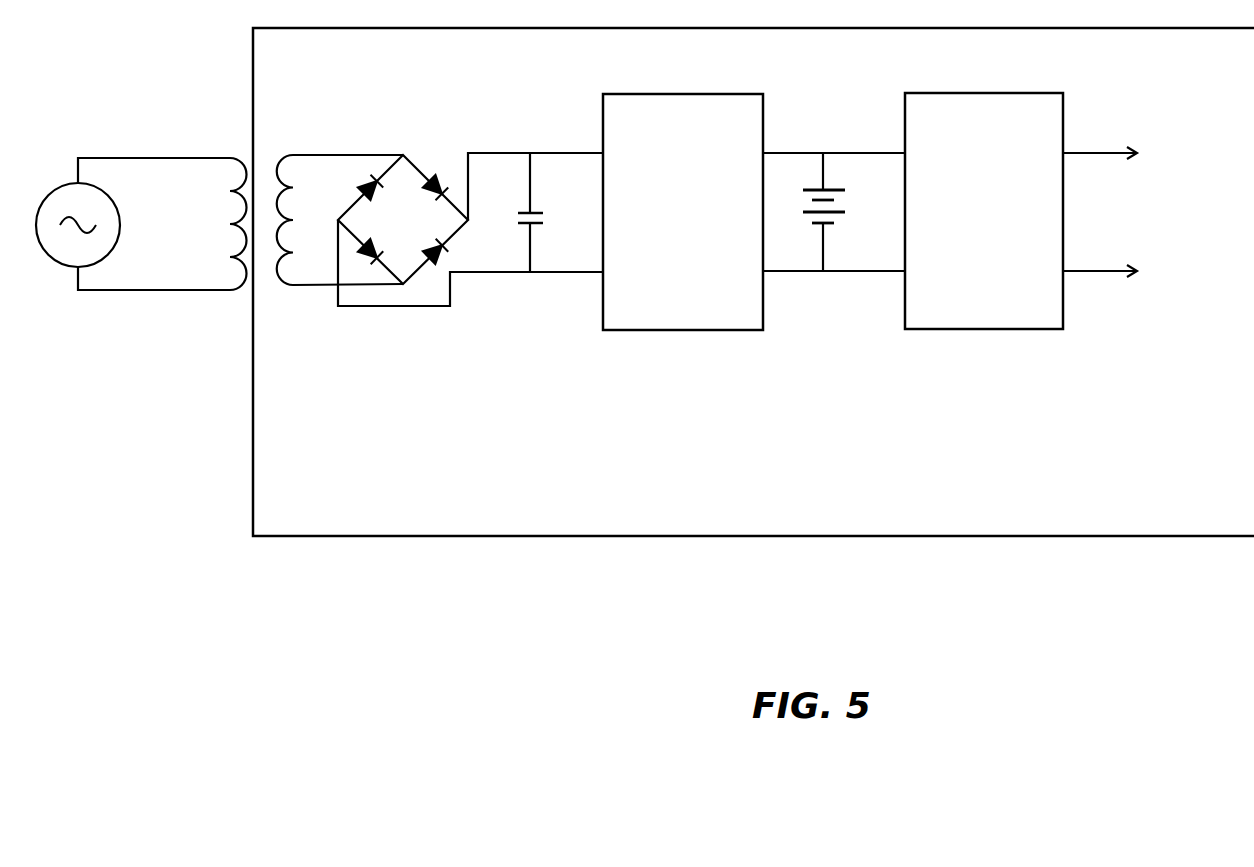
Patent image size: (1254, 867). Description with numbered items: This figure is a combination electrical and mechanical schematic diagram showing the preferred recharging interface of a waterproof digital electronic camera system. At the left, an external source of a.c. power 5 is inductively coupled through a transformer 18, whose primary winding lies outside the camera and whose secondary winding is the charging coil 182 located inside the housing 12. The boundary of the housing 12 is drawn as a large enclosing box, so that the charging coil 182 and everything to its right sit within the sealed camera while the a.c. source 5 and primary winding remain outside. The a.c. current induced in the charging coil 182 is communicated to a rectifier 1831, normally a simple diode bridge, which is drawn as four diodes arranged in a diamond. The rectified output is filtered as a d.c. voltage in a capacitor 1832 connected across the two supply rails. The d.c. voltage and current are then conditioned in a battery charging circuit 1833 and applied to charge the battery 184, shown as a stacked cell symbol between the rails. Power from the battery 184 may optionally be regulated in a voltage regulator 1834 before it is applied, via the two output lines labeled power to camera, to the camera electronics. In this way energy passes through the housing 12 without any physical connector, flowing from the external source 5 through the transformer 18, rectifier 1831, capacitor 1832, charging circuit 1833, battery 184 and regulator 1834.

The external source of a.c. power 5 is at (48, 190).
The transformer 18 is at (286, 191).
The charging coil 182 is at (288, 172).
The rectifier 1831 is at (402, 223).
The capacitor 1832 is at (522, 212).
The battery charging circuit 1833 is at (683, 136).
The battery 184 is at (803, 199).
The voltage regulator 1834 is at (995, 147).
The housing 12 is at (780, 538).